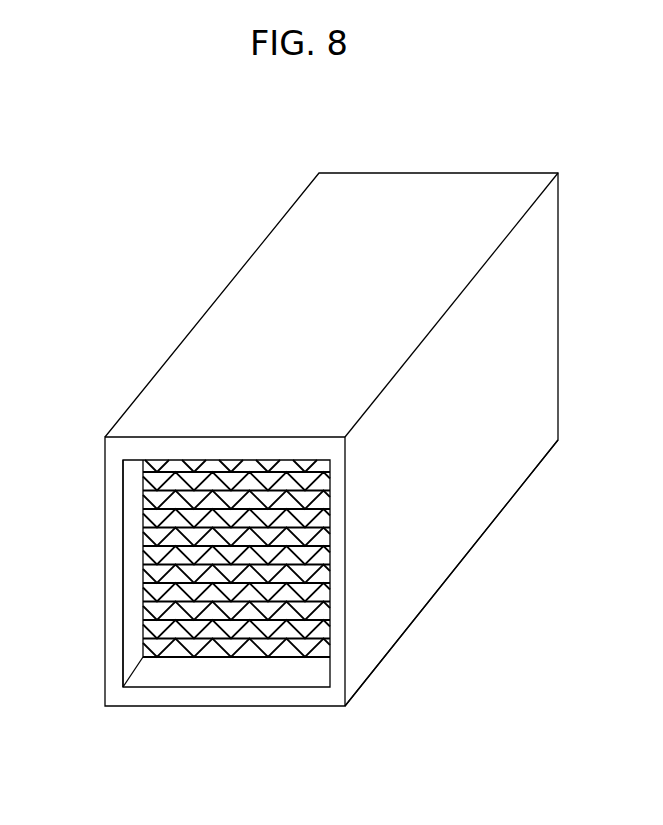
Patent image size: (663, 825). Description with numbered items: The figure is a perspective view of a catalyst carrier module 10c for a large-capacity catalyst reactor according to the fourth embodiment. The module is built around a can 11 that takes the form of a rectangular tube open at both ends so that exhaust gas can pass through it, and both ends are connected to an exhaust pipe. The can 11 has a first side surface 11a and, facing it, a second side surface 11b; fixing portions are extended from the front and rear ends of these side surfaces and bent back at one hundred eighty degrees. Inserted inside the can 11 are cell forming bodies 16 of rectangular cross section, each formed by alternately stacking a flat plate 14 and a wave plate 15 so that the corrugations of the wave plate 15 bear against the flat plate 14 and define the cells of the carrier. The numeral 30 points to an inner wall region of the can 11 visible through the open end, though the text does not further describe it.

The muffler 10c is at (295, 485).
The housing 11 is at (295, 439).
The inlet/front opening 11a is at (105, 549).
The side wall 11b is at (431, 563).
The inner wall 30 is at (132, 594).
The flat sheet 14 is at (194, 658).
The corrugated sheet 15 is at (210, 630).
The sound absorbing core 16 is at (236, 628).